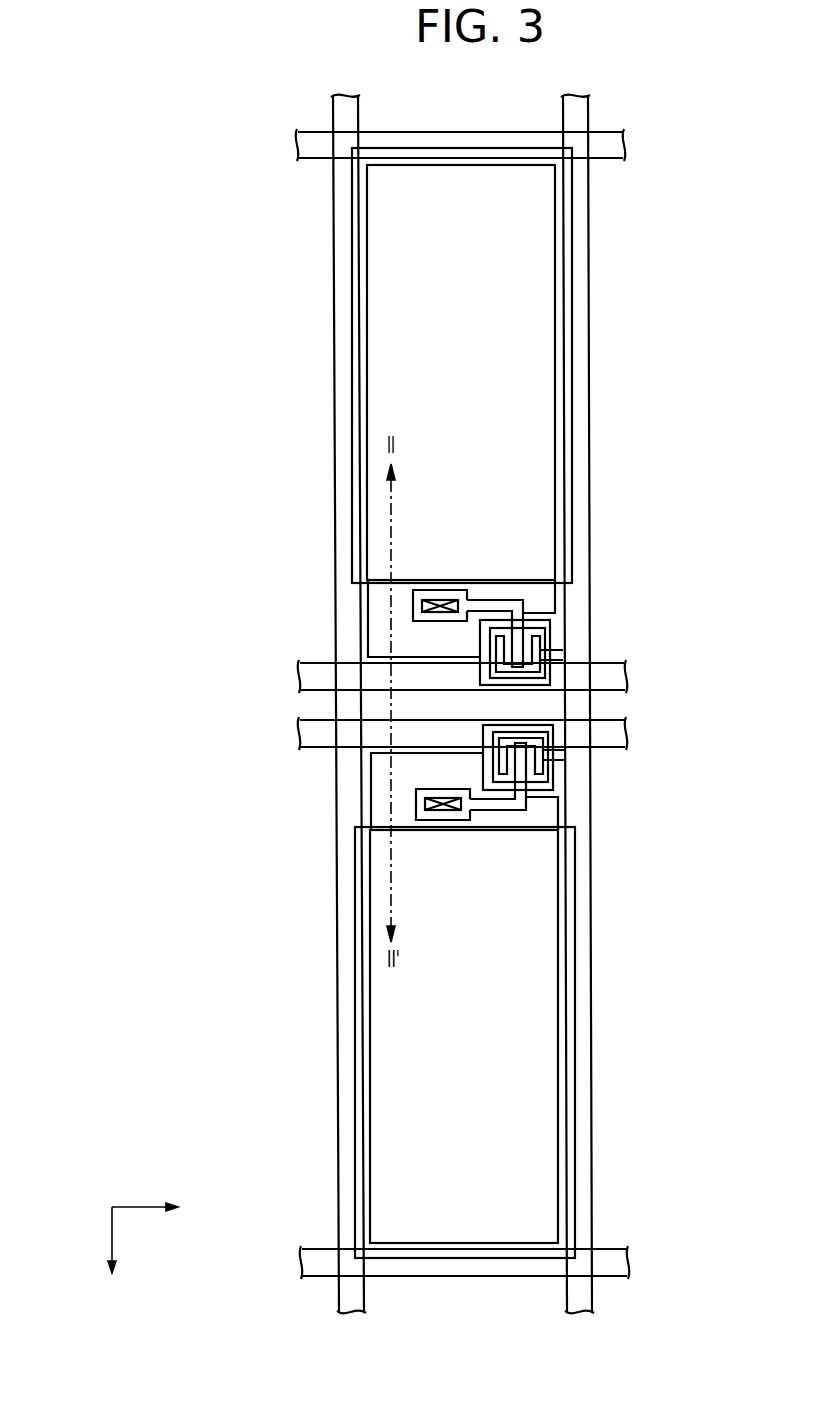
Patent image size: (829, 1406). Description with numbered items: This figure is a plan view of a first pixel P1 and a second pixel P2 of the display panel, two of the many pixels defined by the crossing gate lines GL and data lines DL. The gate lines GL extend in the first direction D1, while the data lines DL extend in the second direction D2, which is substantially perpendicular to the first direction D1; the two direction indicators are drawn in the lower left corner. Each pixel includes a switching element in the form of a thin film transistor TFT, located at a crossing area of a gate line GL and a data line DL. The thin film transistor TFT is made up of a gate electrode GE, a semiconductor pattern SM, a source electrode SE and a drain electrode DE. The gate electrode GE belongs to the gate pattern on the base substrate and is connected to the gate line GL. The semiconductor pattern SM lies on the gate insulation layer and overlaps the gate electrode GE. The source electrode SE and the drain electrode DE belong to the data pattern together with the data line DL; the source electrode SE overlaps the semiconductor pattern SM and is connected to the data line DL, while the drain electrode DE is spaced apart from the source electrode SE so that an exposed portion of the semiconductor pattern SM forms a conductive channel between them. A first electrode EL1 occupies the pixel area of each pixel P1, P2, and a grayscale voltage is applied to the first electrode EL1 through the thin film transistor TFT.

The data line DL is at (584, 102).
The gate line GL is at (618, 143).
The first pixel P1 is at (472, 449).
The second pixel P2 is at (302, 1030).
The first electrode EL1 is at (558, 608).
The thin film transistor TFT is at (599, 675).
The gate electrode GE is at (551, 632).
The semiconductor pattern SM is at (547, 640).
The source electrode SE is at (548, 650).
The drain electrode DE is at (542, 660).
The first direction D1 is at (160, 1207).
The second direction D2 is at (111, 1256).